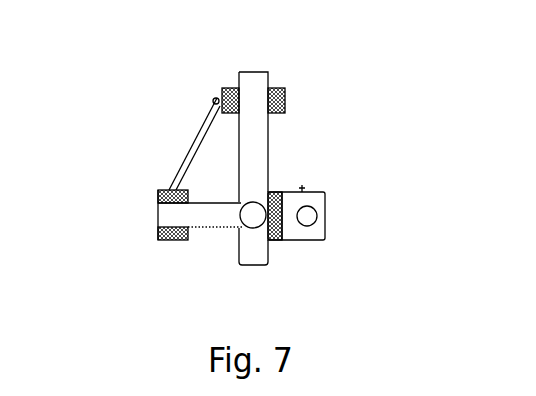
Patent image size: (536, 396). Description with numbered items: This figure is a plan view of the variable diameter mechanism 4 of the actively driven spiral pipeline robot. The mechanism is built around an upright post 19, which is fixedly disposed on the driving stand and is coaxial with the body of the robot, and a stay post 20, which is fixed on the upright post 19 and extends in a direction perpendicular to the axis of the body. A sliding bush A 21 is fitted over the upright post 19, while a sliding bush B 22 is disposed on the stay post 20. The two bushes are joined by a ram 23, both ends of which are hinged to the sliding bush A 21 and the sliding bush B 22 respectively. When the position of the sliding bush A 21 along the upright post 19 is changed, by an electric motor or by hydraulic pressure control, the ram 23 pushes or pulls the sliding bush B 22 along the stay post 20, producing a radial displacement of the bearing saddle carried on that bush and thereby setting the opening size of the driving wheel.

The upright post 19 is at (260, 138).
The sliding bush A 21 is at (340, 75).
The ram 23 is at (193, 147).
The sliding bush B 22 is at (172, 188).
The stay post 20 is at (215, 217).
The variable diameter mechanism 4 is at (270, 173).